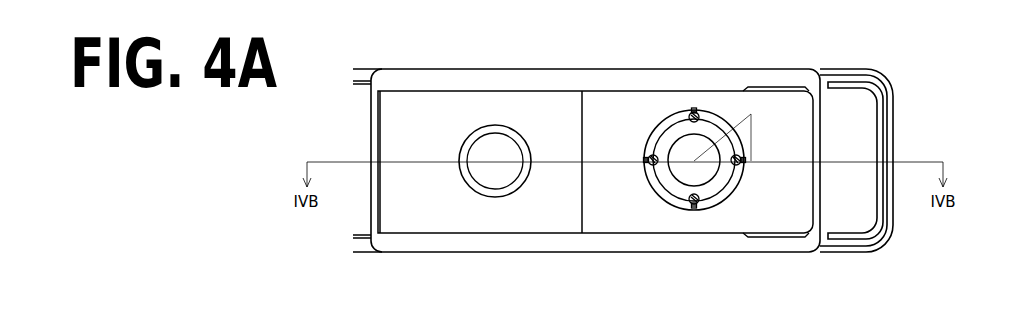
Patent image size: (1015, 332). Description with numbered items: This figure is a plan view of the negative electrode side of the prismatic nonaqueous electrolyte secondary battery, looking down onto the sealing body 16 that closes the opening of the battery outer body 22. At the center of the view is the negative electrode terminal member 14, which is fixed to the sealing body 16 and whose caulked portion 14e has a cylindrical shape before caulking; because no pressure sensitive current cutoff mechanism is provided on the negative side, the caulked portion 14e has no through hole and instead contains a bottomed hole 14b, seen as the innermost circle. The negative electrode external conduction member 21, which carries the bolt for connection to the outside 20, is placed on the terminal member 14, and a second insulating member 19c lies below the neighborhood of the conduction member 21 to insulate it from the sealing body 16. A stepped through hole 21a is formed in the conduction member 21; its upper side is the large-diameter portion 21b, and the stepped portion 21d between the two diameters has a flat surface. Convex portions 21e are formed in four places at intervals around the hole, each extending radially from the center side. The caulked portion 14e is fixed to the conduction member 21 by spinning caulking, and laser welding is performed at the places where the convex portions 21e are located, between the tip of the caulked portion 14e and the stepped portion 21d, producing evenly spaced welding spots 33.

The second insulating member 19c is at (395, 243).
The bolt for connection to the outside 20 is at (483, 175).
The negative electrode external conduction member 21 is at (497, 228).
The stepped through hole 21a is at (656, 209).
The large-diameter portion 21b is at (663, 186).
The stepped portion 21d is at (652, 133).
The convex portions 21e is at (738, 168).
The welding spots 33 is at (693, 111).
The negative electrode terminal member 14 is at (699, 113).
The caulked portion 14e is at (713, 130).
The bottomed hole 14b is at (708, 167).
The battery outer body 22 is at (835, 249).
The sealing body 16 is at (855, 212).